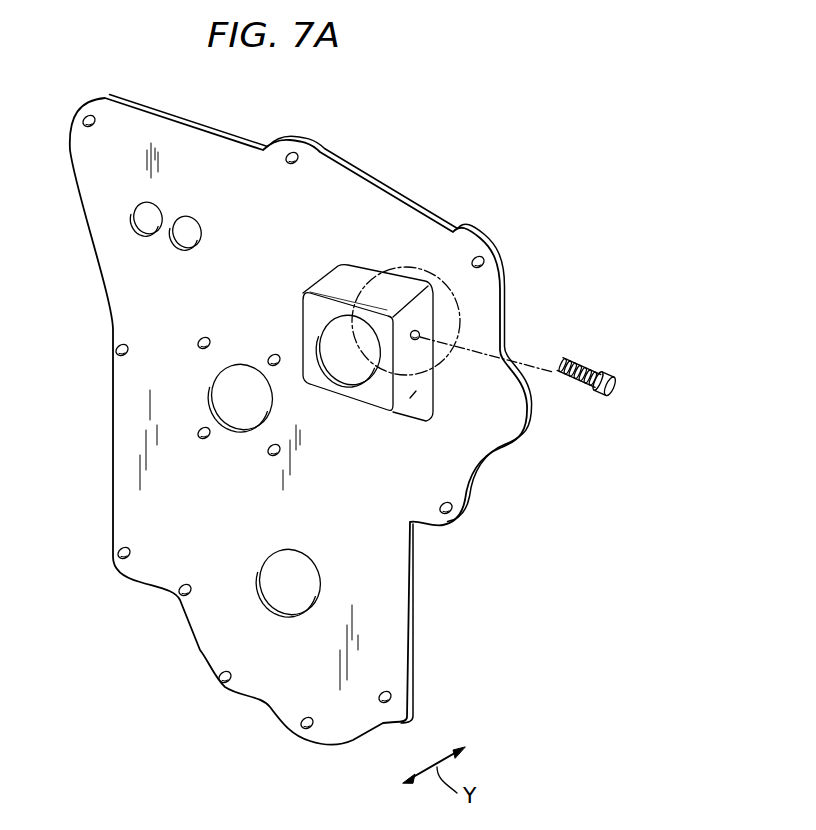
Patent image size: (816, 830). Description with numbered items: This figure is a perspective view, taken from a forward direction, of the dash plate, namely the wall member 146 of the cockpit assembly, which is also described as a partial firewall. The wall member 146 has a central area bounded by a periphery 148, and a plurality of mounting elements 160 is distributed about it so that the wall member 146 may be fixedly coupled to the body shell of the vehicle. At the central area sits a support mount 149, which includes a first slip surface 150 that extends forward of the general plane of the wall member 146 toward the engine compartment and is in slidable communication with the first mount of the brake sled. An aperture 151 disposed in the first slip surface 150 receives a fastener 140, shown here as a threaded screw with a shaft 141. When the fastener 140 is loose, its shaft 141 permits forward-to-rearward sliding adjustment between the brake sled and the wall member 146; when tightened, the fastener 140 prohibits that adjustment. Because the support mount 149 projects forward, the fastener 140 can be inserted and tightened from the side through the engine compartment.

The wall member 146 is at (147, 86).
The periphery 148 is at (112, 445).
The mounting elements 160 is at (116, 350).
The support mount 149 is at (317, 277).
The first slip surface 150 is at (412, 413).
The aperture 151 is at (422, 339).
The shaft 141 is at (572, 388).
The fastener 140 is at (591, 368).